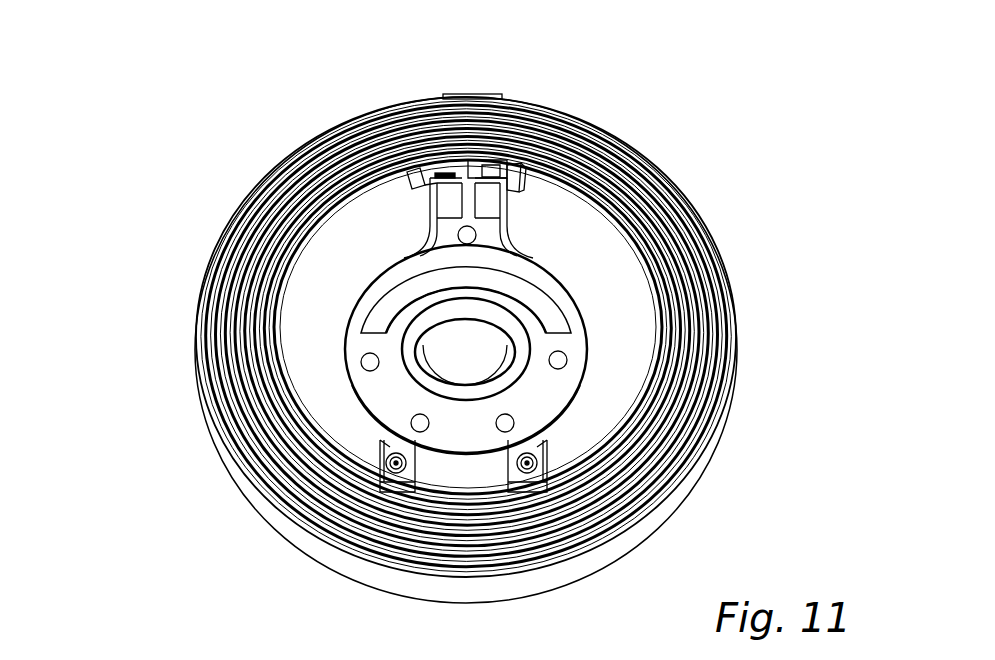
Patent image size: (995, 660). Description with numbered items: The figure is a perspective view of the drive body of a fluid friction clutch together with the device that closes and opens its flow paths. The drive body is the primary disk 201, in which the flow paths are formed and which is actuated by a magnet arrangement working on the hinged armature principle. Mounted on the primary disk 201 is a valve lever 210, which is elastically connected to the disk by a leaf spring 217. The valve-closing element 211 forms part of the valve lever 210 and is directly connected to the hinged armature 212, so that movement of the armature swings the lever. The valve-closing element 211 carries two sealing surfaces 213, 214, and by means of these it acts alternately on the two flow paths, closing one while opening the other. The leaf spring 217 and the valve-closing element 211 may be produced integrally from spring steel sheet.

The primary disk 201 is at (315, 337).
The valve lever 210 is at (527, 232).
The valve-closing element 211 is at (512, 195).
The hinged armature 212 is at (512, 290).
The sealing surface 213 is at (415, 166).
The sealing surface 214 is at (493, 170).
The leaf spring 217 is at (385, 445).